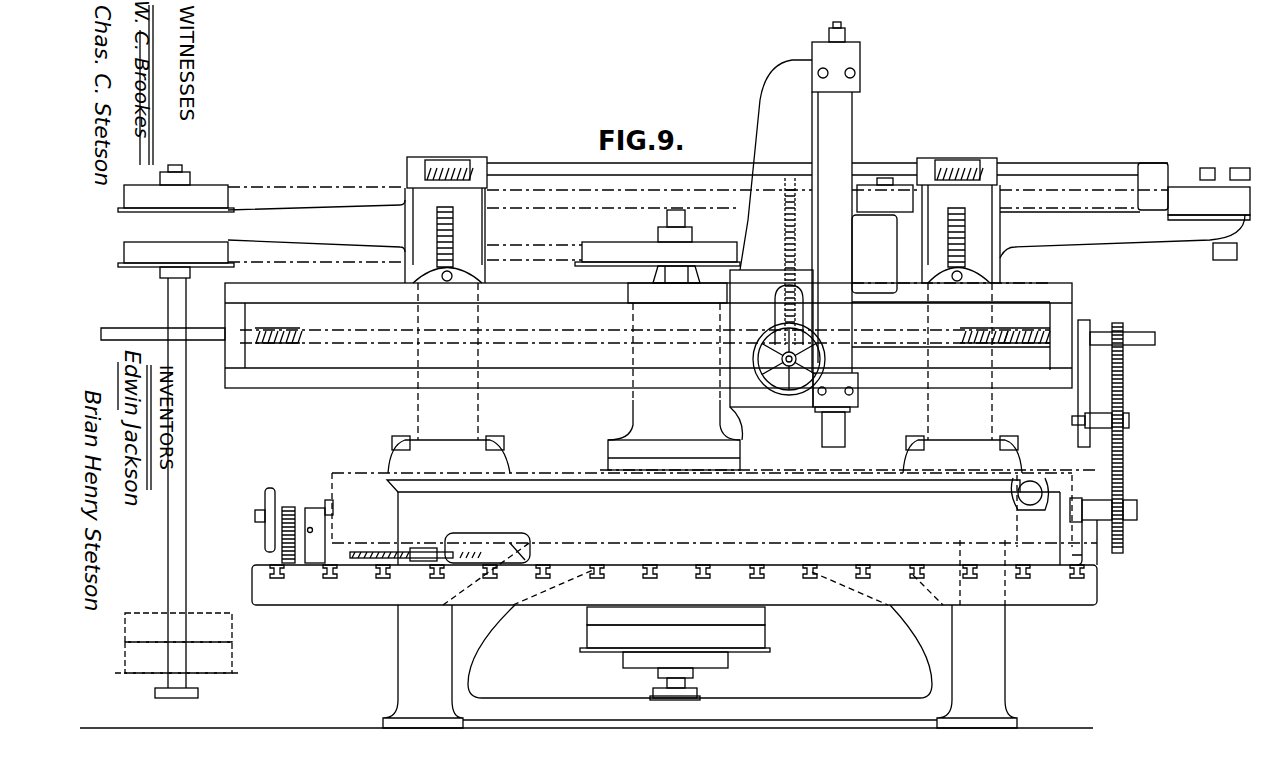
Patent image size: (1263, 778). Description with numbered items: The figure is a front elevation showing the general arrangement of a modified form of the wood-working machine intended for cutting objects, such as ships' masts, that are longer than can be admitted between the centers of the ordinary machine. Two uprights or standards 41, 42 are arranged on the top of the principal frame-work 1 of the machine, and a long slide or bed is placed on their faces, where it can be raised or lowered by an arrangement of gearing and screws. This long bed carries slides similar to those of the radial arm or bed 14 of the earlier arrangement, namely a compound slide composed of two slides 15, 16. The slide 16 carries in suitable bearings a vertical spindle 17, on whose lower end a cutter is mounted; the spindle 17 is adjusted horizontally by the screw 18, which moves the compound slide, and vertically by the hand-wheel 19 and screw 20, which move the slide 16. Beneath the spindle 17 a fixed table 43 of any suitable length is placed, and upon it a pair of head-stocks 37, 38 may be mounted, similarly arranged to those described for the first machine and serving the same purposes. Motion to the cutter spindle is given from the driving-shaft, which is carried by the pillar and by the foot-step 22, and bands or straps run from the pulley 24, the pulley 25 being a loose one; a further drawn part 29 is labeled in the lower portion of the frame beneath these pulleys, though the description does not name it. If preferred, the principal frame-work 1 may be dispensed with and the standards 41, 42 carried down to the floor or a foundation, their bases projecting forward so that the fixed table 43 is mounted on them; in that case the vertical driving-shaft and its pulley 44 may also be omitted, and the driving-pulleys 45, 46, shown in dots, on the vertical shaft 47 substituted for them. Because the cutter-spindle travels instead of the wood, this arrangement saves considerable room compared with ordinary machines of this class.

The principal frame-work 1 is at (714, 519).
The radial arm or bed 14 is at (848, 386).
The slide 15 is at (770, 250).
The slide 16 is at (771, 338).
The vertical spindle 17 is at (862, 234).
The screw 18 is at (586, 335).
The hand-wheel 19 is at (789, 363).
The screw 20 is at (786, 261).
The foot-step 22 is at (683, 689).
The pulley 24 is at (676, 616).
The loose pulley 25 is at (675, 638).
The block 29 is at (675, 665).
The head-stock 37 is at (1112, 442).
The head-stock 38 is at (368, 525).
The upright or standard 41 is at (449, 315).
The upright or standard 42 is at (962, 315).
The fixed table 43 is at (674, 634).
The pulley 44 is at (252, 221).
The driving-pulley 45 is at (167, 627).
The driving-pulley 46 is at (171, 657).
The vertical shaft 47 is at (176, 488).